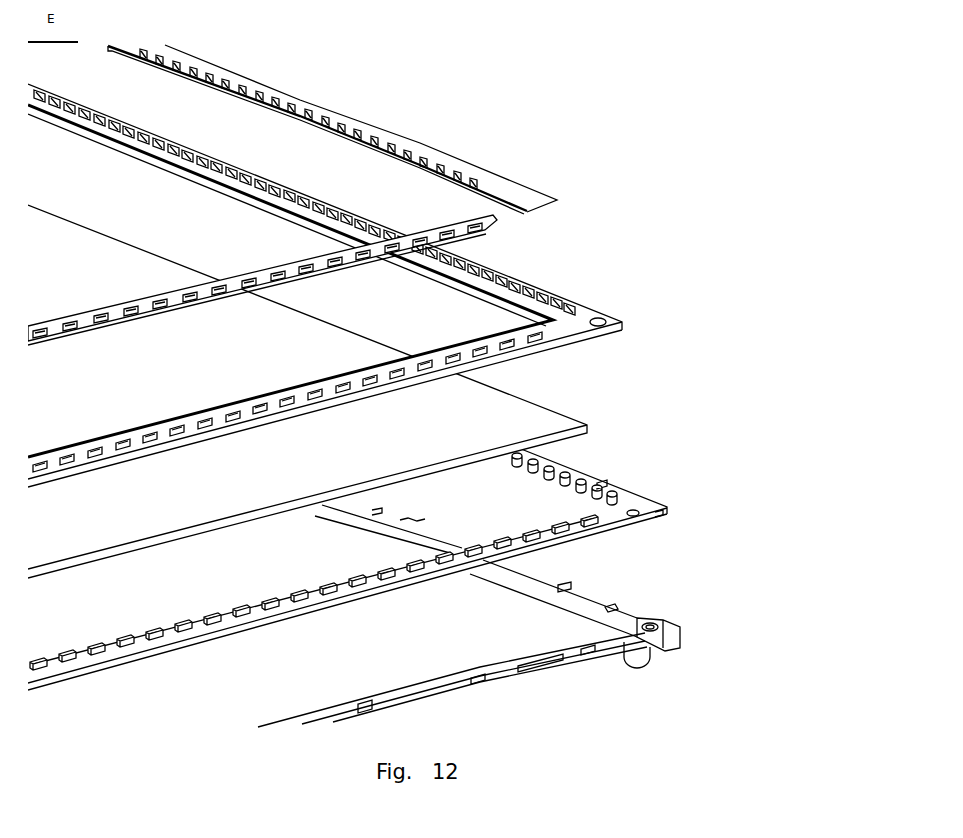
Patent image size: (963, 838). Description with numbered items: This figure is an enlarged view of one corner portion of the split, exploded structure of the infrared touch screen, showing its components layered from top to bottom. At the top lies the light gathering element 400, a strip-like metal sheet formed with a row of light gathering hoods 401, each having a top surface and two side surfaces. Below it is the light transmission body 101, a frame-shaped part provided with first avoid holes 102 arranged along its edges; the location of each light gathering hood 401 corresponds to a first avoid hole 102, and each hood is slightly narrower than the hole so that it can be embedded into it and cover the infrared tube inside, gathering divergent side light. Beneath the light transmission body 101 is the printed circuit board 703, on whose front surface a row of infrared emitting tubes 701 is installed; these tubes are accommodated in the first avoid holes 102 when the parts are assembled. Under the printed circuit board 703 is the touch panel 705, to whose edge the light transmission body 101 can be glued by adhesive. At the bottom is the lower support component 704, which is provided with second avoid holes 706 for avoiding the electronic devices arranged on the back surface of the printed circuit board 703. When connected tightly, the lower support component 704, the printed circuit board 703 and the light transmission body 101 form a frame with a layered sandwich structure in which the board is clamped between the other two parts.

The light gathering element 400 is at (572, 203).
The light gathering hood 401 is at (320, 262).
The light transmission body 101 is at (376, 285).
The first avoid hole 102 is at (555, 302).
The touch panel 705 is at (602, 423).
The printed circuit board 703 is at (685, 500).
The infrared emitting tube 701 is at (385, 572).
The lower support component 704 is at (685, 628).
The second avoid hole 706 is at (445, 690).